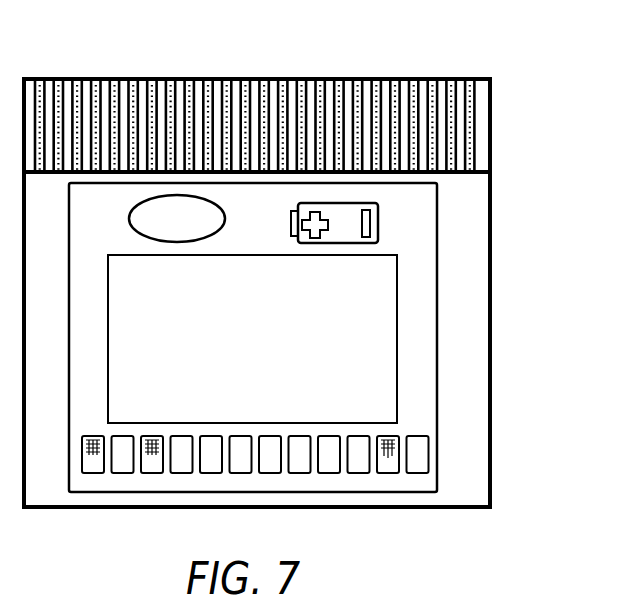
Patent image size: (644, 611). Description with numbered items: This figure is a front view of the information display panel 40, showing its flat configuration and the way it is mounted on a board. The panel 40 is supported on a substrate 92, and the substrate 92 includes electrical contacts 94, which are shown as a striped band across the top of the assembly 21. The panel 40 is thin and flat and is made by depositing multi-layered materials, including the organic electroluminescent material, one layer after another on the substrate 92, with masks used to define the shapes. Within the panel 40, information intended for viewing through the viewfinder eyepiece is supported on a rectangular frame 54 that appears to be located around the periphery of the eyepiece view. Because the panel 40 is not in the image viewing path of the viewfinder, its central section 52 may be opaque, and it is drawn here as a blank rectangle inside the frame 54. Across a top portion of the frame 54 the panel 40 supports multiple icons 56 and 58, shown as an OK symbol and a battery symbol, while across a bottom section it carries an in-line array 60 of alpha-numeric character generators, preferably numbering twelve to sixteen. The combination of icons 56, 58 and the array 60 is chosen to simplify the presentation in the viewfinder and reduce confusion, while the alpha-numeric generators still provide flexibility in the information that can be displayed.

The portable device 21 is at (540, 108).
The electrical contacts 94 is at (474, 108).
The substrate 92 is at (473, 263).
The panel 40 is at (438, 317).
The rectangular frame 54 is at (422, 349).
The central section 52 is at (380, 383).
The icon 56 is at (215, 241).
The icon 58 is at (346, 246).
The in-line array of alpha-numeric character generators 60 is at (172, 488).